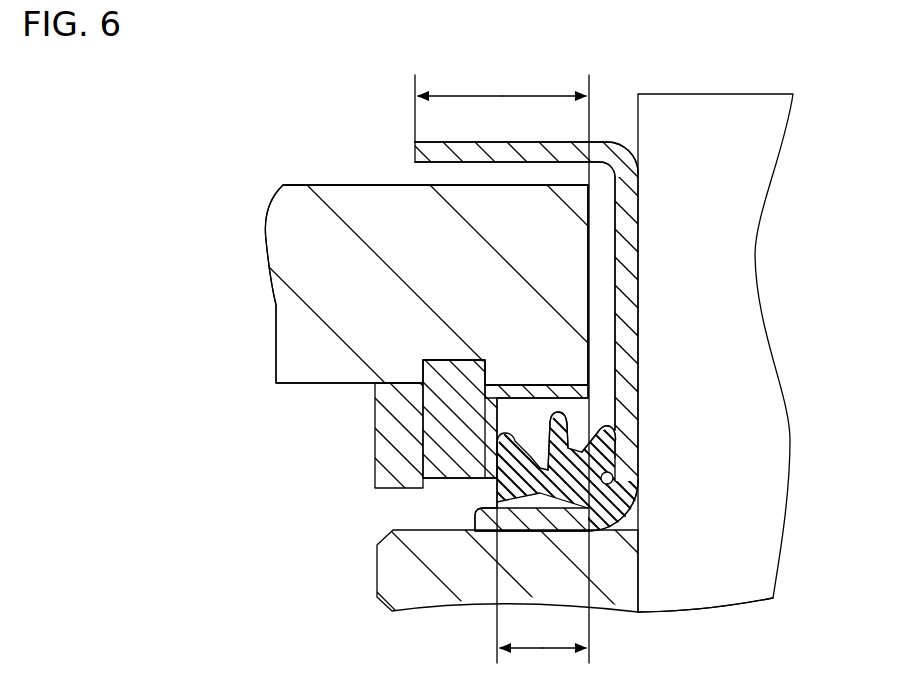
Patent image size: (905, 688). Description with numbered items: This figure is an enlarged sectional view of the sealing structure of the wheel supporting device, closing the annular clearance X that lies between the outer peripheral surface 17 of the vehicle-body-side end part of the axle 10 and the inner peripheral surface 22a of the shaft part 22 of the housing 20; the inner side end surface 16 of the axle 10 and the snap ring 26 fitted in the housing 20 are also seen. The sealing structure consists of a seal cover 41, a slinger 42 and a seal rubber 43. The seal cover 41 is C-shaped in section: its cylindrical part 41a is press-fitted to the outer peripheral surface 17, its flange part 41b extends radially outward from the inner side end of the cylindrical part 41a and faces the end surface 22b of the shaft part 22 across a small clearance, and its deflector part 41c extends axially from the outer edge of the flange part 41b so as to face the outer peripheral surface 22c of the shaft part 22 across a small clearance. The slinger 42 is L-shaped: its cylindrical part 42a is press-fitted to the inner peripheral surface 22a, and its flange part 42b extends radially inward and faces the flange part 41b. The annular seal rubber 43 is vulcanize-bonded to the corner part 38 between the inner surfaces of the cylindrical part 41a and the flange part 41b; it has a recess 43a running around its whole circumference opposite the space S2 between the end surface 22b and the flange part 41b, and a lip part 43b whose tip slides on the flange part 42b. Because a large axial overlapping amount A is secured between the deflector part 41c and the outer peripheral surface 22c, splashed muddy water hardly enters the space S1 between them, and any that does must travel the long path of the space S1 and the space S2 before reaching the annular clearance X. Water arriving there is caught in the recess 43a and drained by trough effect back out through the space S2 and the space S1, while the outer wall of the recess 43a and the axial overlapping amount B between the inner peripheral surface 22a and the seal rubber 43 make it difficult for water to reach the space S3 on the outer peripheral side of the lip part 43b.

The axle 10 is at (722, 91).
The inner side end surface 16 is at (628, 601).
The outer peripheral surface 17 is at (425, 530).
The housing 20 is at (320, 180).
The shaft part 22 is at (473, 282).
The inner peripheral surface 22a is at (537, 383).
The end surface 22b is at (587, 292).
The outer peripheral surface 22c is at (527, 184).
The snap ring 26 is at (423, 373).
The corner part 38 is at (637, 492).
The seal cover 41 is at (644, 311).
The cylindrical part 41a is at (514, 527).
The flange part 41b is at (631, 346).
The deflector part 41c is at (523, 150).
The slinger 42 is at (505, 375).
The cylindrical part 42a is at (568, 394).
The flange part 42b is at (478, 445).
The seal rubber 43 is at (566, 507).
The recess 43a is at (612, 428).
The lip part 43b is at (517, 452).
The space S1 is at (470, 174).
The space S2 is at (605, 256).
The space S3 is at (463, 384).
The overlapping amount A is at (502, 364).
The overlapping amount B is at (541, 577).
The annular clearance X is at (623, 527).